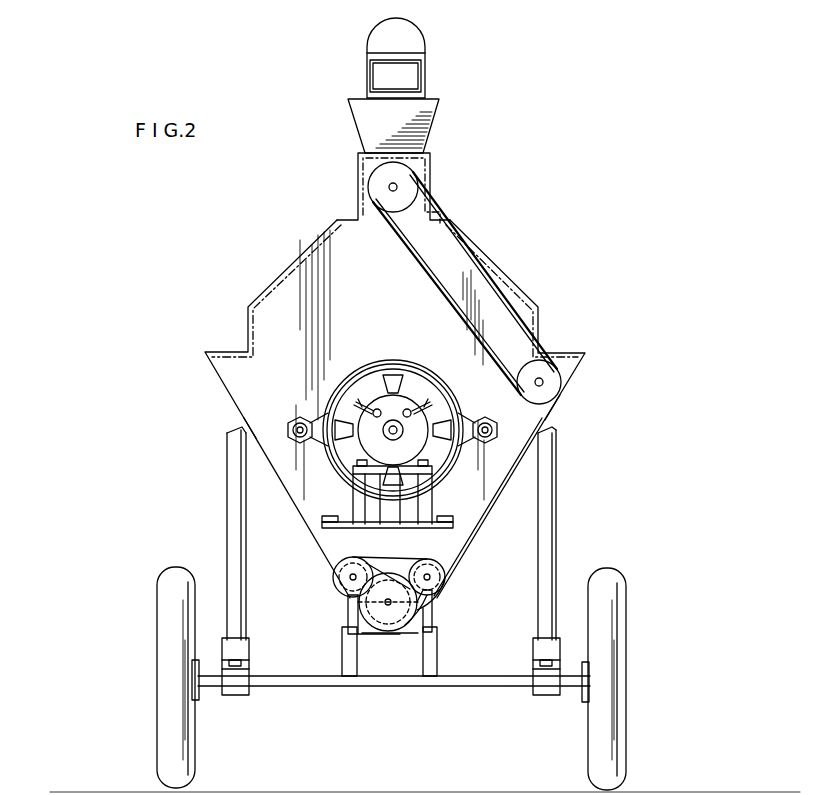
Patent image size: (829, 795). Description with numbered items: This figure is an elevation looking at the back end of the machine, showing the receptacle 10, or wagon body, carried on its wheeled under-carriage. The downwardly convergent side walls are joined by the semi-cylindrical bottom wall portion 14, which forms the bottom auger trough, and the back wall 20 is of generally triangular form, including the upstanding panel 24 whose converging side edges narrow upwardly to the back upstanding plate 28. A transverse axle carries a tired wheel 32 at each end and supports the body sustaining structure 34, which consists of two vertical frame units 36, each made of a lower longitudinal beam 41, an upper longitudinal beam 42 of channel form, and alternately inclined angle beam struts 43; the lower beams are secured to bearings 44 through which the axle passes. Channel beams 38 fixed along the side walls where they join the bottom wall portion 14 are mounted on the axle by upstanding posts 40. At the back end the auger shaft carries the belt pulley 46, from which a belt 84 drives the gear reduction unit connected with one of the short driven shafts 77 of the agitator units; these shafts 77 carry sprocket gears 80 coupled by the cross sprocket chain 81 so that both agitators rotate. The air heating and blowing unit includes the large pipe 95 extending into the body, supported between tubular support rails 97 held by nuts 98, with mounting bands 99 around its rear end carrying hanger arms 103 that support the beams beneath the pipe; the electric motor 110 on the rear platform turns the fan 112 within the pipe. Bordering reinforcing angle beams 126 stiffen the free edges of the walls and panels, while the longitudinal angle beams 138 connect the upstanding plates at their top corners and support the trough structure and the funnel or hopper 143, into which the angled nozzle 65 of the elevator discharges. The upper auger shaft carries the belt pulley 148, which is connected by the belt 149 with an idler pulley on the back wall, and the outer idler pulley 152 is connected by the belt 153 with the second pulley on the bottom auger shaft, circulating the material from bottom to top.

The receptacle 10 is at (218, 386).
The bottom wall portion 14 is at (388, 640).
The back wall 20 is at (244, 398).
The upstanding panel 24 is at (492, 314).
The back upstanding plate 28 is at (420, 168).
The tired wheel 32 is at (165, 672).
The body sustaining structure 34 is at (560, 545).
The vertical frame unit 36 is at (556, 512).
The channel beam 38 is at (434, 618).
The upstanding post 40 is at (350, 662).
The lower longitudinal beam 41 is at (488, 523).
The upper longitudinal beam 42 is at (228, 433).
The angle beam strut 43 is at (238, 490).
The bearing 44 is at (238, 698).
The belt pulley 46 is at (402, 618).
The angled nozzle 65 is at (428, 41).
The driven shaft 77 is at (350, 577).
The sprocket gear 80 is at (342, 590).
The cross sprocket chain 81 is at (365, 553).
The belt 84 is at (357, 620).
The pipe 95 is at (452, 392).
The tubular support rail 97 is at (296, 443).
The nut 98 is at (298, 424).
The mounting band 99 is at (352, 382).
The hanger arm 103 is at (355, 497).
The electric motor 110 is at (399, 411).
The fan 112 is at (392, 375).
The bordering reinforcing angle beam 126 is at (284, 276).
The angle beam 138 is at (360, 157).
The funnel or hopper 143 is at (435, 121).
The belt pulley 148 is at (365, 187).
The belt 149 is at (440, 208).
The idler pulley 152 is at (550, 383).
The belt 153 is at (546, 420).